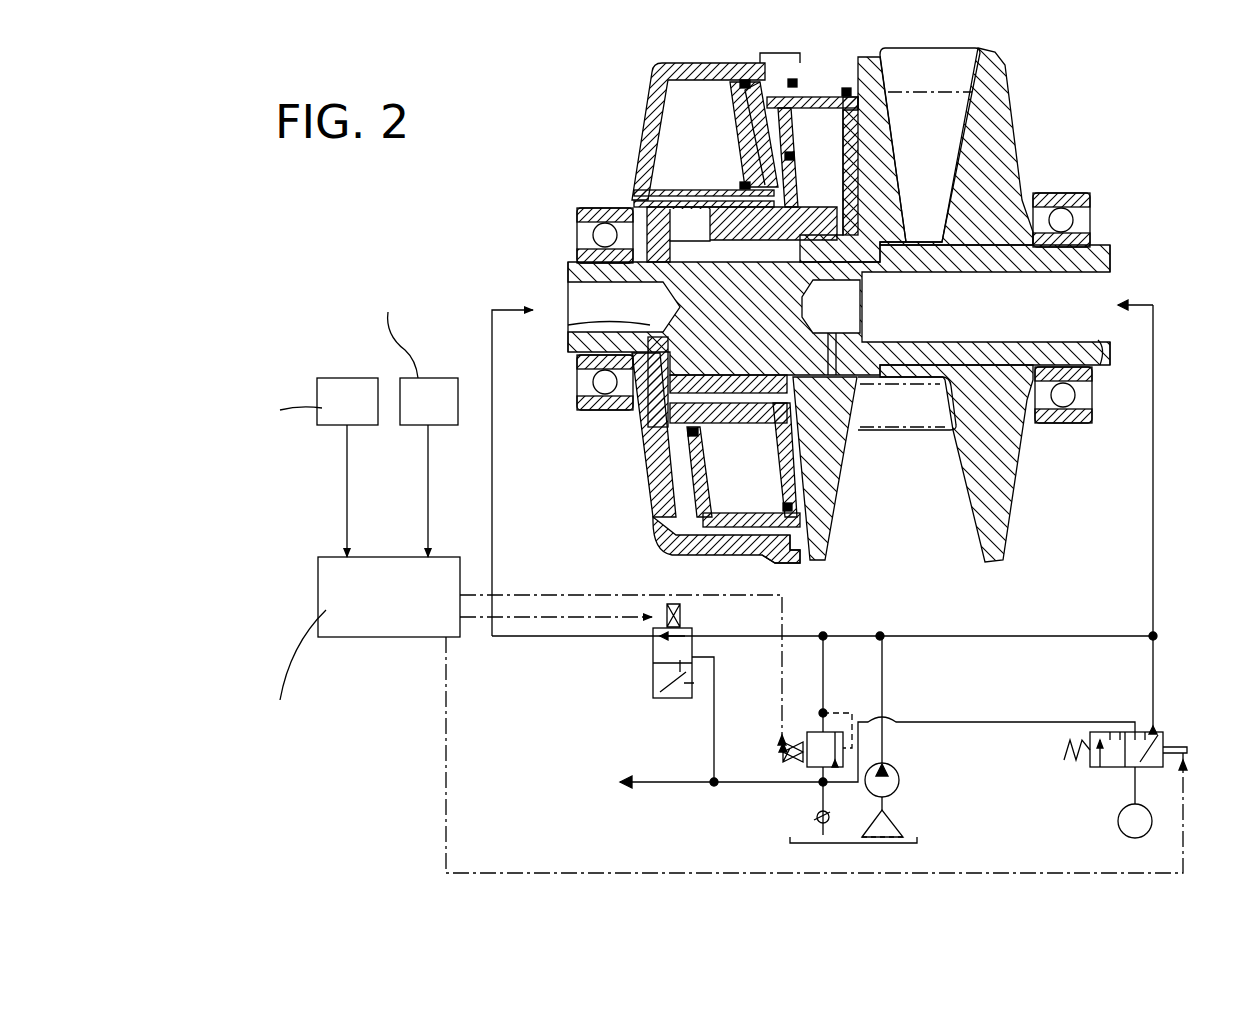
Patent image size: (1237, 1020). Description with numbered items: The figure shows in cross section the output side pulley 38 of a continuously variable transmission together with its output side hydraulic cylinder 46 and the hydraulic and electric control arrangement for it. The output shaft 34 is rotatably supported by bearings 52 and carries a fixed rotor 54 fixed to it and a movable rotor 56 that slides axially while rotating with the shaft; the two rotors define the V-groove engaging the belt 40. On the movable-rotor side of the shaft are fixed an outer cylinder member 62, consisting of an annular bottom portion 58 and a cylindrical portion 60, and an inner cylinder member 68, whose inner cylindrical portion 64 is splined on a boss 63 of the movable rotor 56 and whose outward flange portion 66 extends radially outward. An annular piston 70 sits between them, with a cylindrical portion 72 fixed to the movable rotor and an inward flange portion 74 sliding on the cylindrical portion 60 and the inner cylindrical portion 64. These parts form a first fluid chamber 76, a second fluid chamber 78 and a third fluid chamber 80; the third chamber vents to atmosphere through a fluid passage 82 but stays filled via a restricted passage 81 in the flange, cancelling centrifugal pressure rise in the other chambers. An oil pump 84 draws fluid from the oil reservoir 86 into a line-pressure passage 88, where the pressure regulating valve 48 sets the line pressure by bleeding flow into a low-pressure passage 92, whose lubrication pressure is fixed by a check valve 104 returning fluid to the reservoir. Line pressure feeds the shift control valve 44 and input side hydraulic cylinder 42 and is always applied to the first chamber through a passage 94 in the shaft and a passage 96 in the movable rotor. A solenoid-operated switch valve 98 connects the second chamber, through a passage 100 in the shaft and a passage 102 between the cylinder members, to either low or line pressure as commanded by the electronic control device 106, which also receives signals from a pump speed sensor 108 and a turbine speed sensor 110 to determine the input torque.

The output shaft 34 is at (1108, 258).
The output side pulley 38 is at (972, 290).
The belt 40 is at (920, 432).
The input side hydraulic cylinder 42 is at (1118, 822).
The shift control valve 44 is at (1160, 738).
The output side hydraulic cylinder 46 is at (693, 143).
The pressure regulating valve 48 is at (818, 732).
The bearings 52 is at (577, 218).
The fixed rotor 54 is at (1000, 110).
The movable rotor 56 is at (838, 545).
The bottom portion 58 is at (645, 478).
The cylindrical portion 60 is at (752, 548).
The outer cylinder member 62 is at (652, 552).
The boss 63 is at (728, 226).
The inner cylindrical portion 64 is at (728, 422).
The outward flange portion 66 is at (780, 470).
The inner cylinder member 68 is at (765, 432).
The annular piston 70 is at (782, 90).
The cylindrical portion 72 is at (810, 110).
The inward flange portion 74 is at (740, 150).
The first fluid chamber 76 is at (838, 100).
The second fluid chamber 78 is at (706, 78).
The third fluid chamber 80 is at (768, 62).
The restricted passage 81 is at (793, 160).
The fluid passage 82 is at (672, 190).
The oil pump 84 is at (900, 774).
The oil reservoir 86 is at (917, 843).
The line-pressure passage 88 is at (1155, 478).
The low-pressure passage 92 is at (735, 784).
The passage 94 is at (850, 335).
The passage 96 is at (833, 370).
The switch valve 98 is at (652, 652).
The passage 100 is at (568, 325).
The passage 102 is at (655, 407).
The check valve 104 is at (814, 814).
The electronic control device 106 is at (360, 637).
The pump speed sensor 108 is at (332, 378).
The turbine speed sensor 110 is at (432, 378).